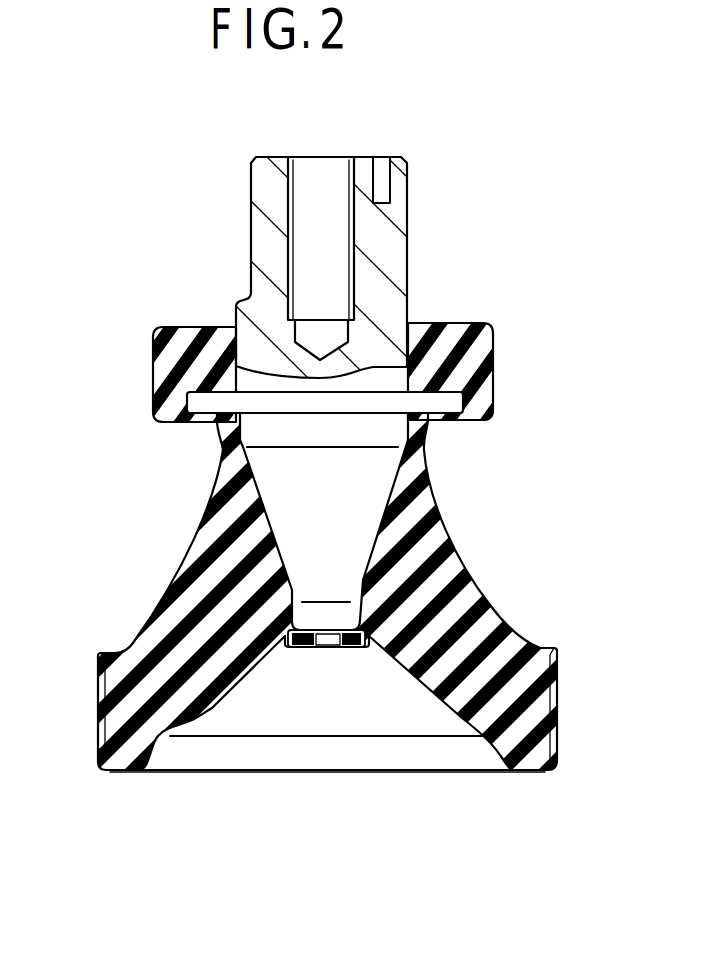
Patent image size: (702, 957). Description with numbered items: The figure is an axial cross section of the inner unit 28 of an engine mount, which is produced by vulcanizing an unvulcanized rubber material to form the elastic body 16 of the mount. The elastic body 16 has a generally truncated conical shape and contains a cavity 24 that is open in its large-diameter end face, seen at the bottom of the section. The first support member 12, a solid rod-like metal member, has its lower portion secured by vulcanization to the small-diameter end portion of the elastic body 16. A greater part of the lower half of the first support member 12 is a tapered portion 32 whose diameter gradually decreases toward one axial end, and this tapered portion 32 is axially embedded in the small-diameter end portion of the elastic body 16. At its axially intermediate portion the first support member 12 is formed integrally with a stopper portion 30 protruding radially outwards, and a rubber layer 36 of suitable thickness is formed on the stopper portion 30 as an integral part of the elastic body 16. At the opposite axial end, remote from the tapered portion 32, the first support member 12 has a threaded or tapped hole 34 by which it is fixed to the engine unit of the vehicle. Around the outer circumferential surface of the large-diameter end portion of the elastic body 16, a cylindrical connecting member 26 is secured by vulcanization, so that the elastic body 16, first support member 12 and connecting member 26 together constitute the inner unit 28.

The first support member 12 is at (351, 478).
The elastic body 16 is at (491, 555).
The cavity 24 is at (240, 678).
The connecting member 26 is at (557, 680).
The inner unit 28 is at (95, 292).
The stopper portion 30 is at (448, 399).
The tapered portion 32 is at (292, 550).
The threaded hole 34 is at (293, 202).
The rubber layer 36 is at (187, 335).